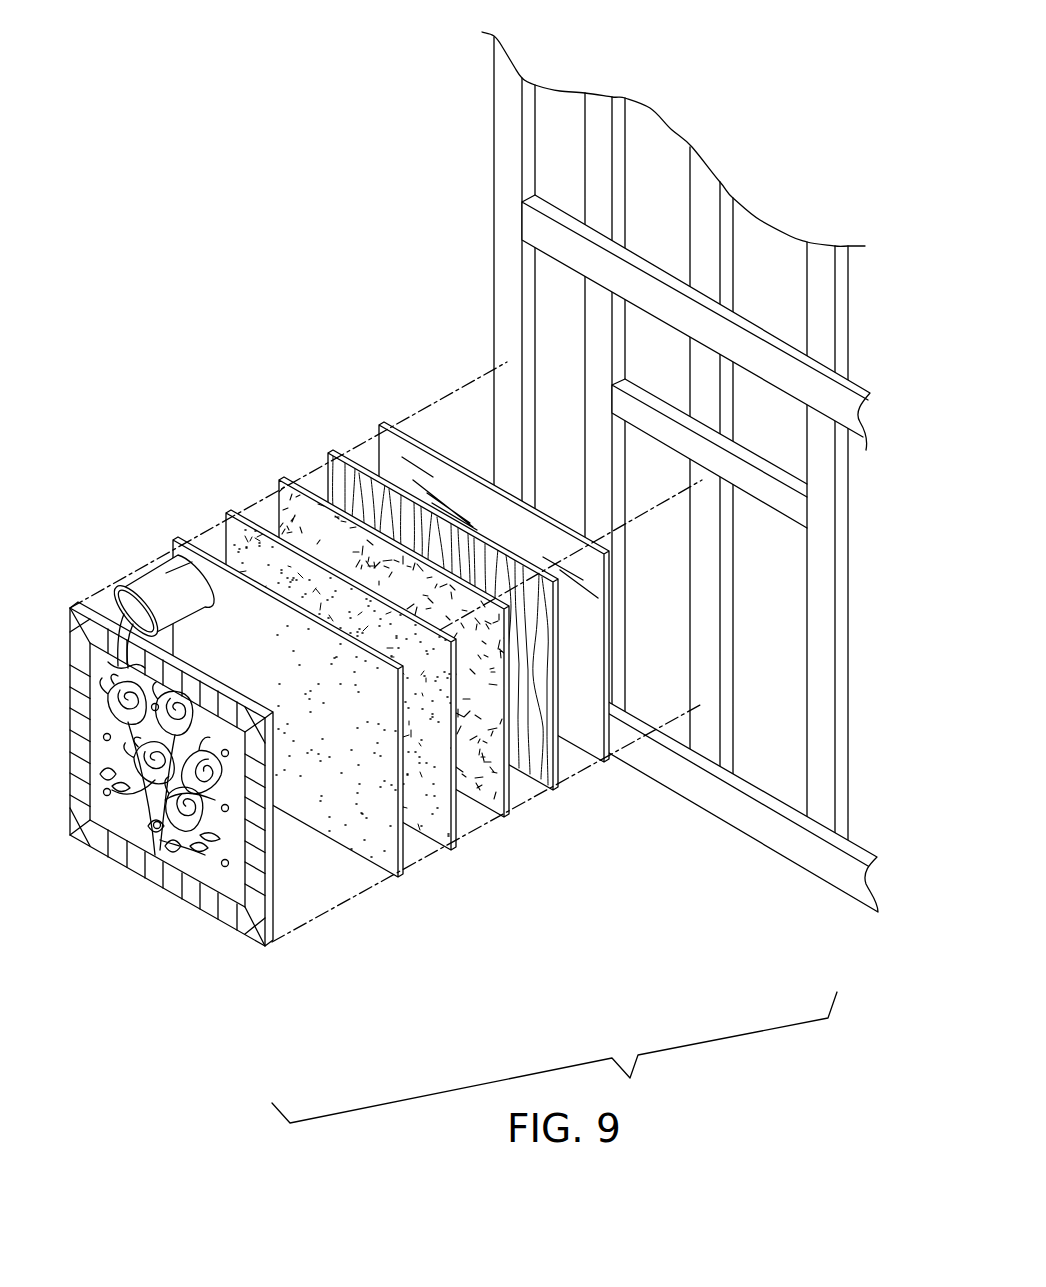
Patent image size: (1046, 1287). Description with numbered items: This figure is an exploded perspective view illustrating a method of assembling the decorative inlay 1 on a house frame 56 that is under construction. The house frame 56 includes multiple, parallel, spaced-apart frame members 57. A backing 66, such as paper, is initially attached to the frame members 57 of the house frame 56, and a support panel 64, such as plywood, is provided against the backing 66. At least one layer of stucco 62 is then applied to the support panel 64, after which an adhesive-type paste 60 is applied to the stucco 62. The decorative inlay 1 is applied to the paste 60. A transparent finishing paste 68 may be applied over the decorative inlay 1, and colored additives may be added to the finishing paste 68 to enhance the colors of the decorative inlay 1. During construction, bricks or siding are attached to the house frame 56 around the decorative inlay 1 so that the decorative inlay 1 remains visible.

The decorative inlay 1 is at (163, 906).
The house frame 56 is at (494, 157).
The frame members 57 is at (505, 276).
The adhesive-type paste 60 is at (173, 540).
The stucco 62 is at (224, 515).
The support panel 64 is at (333, 477).
The backing 66 is at (392, 443).
The transparent finishing paste 68 is at (122, 610).